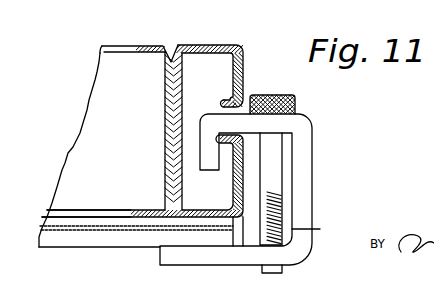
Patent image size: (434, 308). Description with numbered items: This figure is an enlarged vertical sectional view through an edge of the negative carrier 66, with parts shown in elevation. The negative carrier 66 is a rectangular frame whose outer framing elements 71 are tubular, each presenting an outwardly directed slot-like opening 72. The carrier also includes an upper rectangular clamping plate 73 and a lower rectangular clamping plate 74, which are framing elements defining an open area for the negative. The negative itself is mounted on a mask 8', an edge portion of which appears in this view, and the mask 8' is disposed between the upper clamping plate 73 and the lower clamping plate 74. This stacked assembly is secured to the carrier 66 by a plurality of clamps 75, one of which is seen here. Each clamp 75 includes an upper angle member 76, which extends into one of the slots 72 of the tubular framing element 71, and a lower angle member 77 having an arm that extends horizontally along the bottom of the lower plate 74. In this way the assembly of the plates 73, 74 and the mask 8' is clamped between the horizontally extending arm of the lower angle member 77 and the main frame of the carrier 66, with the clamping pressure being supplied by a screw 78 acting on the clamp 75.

The negative carrier 66 is at (144, 43).
The outer framing element 71 is at (207, 43).
The slot-like opening 72 is at (220, 108).
The upper rectangular clamping plate 73 is at (117, 220).
The mask 8' is at (136, 255).
The lower rectangular clamping plate 74 is at (128, 240).
The clamp 75 is at (312, 192).
The upper angle member 76 is at (298, 122).
The lower angle member 77 is at (243, 258).
The screw 78 is at (273, 166).